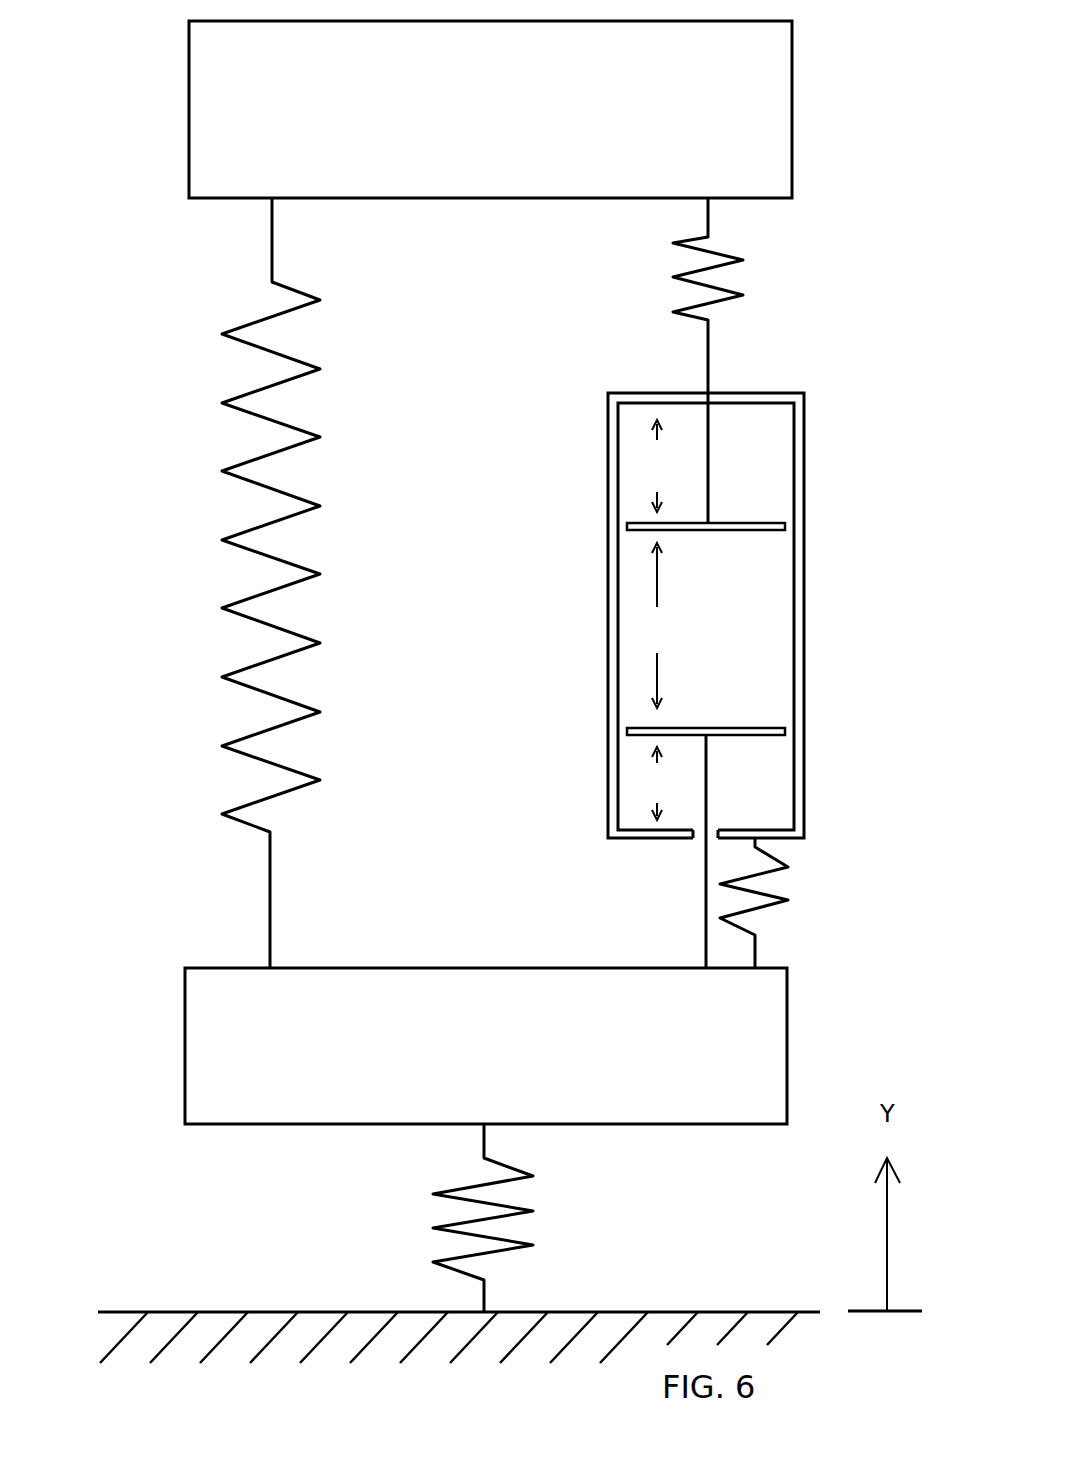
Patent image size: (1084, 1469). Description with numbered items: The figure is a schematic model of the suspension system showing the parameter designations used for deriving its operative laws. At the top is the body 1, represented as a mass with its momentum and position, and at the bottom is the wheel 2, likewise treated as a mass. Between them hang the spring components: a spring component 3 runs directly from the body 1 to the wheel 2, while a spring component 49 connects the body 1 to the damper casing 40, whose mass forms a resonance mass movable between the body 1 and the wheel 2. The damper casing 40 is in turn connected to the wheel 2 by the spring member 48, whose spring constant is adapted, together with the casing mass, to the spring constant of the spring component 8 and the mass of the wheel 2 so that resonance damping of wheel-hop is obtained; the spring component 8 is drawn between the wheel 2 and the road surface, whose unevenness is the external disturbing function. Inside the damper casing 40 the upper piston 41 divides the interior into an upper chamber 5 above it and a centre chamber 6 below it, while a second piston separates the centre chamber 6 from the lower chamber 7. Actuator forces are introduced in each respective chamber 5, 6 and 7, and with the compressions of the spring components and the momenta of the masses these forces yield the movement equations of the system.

The body 1 is at (490, 109).
The wheel 2 is at (486, 1046).
The spring component 3 is at (253, 387).
The spring component 49 is at (727, 285).
The damper casing 40 is at (547, 630).
The upper piston 41 is at (750, 530).
The upper chamber 5 is at (753, 470).
The centre chamber 6 is at (730, 645).
The lower chamber 7 is at (740, 781).
The spring member 48 is at (752, 893).
The spring component 8 is at (535, 1245).